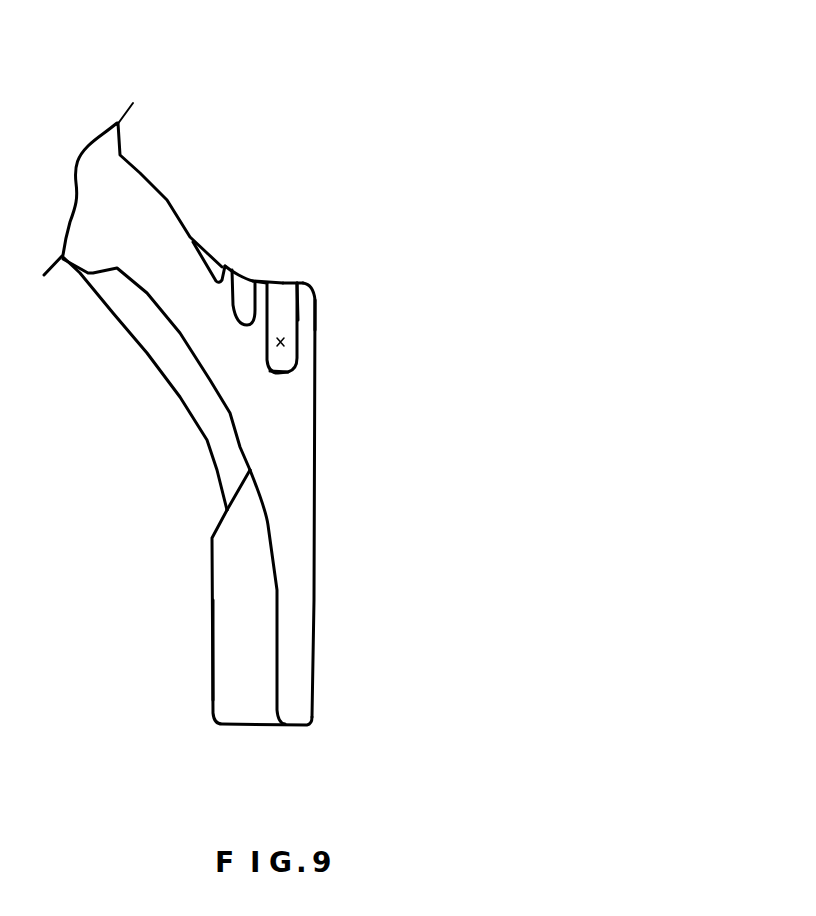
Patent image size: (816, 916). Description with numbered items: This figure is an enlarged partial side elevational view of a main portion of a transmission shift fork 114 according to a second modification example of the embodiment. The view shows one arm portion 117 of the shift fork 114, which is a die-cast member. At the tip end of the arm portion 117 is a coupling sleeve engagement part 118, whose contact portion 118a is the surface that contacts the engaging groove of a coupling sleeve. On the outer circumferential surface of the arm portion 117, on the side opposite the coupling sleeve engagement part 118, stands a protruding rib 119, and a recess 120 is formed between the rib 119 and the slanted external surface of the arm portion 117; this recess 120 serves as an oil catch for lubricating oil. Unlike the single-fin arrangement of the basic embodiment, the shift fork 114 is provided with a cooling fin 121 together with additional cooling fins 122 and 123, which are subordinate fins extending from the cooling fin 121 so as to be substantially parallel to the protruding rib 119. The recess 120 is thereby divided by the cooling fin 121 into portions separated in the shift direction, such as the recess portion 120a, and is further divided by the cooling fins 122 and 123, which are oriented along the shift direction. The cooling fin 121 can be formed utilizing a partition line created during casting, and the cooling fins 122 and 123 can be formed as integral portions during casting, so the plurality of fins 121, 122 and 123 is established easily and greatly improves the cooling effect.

The shift fork 114 is at (323, 146).
The arm portion 117 is at (300, 410).
The coupling sleeve engagement part 118 is at (207, 527).
The contact portion 118a is at (227, 622).
The protruding rib 119 is at (310, 310).
The recess 120 is at (220, 272).
The recess portion 120a is at (292, 358).
The cooling fin 121 is at (285, 283).
The additional cooling fin 122 is at (262, 283).
The additional cooling fin 123 is at (225, 264).